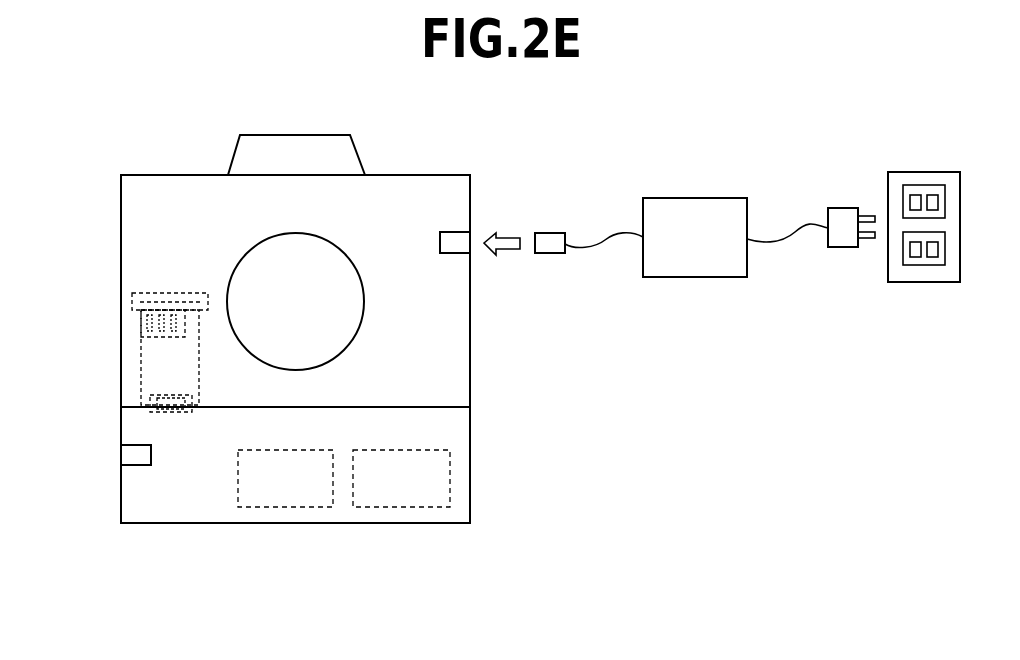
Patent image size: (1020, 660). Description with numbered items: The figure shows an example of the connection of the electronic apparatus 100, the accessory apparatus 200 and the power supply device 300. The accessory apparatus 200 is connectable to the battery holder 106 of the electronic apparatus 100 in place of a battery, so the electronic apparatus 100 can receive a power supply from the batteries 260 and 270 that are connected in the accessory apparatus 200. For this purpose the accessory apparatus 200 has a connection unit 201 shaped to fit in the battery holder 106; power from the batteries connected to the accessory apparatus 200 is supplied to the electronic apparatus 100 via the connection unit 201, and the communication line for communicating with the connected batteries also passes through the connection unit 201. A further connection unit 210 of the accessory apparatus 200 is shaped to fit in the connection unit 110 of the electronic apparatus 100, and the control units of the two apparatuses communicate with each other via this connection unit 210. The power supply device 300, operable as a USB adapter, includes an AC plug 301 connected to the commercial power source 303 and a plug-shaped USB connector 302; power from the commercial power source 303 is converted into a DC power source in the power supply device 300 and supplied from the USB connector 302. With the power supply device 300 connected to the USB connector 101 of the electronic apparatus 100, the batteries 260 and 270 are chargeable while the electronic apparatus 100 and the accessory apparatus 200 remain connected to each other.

The electronic apparatus 100 is at (408, 175).
The USB connector 101 is at (455, 232).
The battery holder 106 is at (165, 294).
The connection unit 110 is at (145, 400).
The connection unit 201 is at (141, 322).
The connection unit 210 is at (165, 411).
The accessory apparatus 200 is at (470, 468).
The battery 260 is at (284, 508).
The battery 270 is at (402, 508).
The power supply device 300 is at (695, 198).
The AC plug 301 is at (843, 208).
The USB connector 302 is at (550, 233).
The commercial power source 303 is at (922, 185).